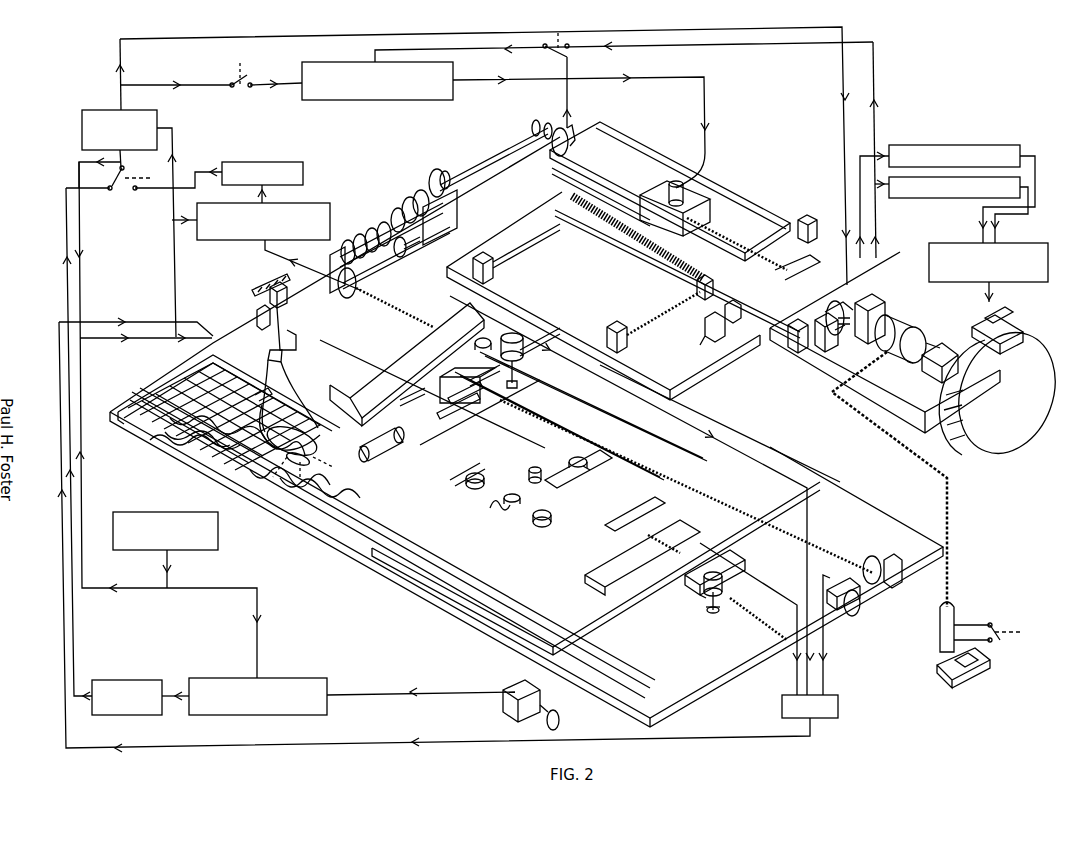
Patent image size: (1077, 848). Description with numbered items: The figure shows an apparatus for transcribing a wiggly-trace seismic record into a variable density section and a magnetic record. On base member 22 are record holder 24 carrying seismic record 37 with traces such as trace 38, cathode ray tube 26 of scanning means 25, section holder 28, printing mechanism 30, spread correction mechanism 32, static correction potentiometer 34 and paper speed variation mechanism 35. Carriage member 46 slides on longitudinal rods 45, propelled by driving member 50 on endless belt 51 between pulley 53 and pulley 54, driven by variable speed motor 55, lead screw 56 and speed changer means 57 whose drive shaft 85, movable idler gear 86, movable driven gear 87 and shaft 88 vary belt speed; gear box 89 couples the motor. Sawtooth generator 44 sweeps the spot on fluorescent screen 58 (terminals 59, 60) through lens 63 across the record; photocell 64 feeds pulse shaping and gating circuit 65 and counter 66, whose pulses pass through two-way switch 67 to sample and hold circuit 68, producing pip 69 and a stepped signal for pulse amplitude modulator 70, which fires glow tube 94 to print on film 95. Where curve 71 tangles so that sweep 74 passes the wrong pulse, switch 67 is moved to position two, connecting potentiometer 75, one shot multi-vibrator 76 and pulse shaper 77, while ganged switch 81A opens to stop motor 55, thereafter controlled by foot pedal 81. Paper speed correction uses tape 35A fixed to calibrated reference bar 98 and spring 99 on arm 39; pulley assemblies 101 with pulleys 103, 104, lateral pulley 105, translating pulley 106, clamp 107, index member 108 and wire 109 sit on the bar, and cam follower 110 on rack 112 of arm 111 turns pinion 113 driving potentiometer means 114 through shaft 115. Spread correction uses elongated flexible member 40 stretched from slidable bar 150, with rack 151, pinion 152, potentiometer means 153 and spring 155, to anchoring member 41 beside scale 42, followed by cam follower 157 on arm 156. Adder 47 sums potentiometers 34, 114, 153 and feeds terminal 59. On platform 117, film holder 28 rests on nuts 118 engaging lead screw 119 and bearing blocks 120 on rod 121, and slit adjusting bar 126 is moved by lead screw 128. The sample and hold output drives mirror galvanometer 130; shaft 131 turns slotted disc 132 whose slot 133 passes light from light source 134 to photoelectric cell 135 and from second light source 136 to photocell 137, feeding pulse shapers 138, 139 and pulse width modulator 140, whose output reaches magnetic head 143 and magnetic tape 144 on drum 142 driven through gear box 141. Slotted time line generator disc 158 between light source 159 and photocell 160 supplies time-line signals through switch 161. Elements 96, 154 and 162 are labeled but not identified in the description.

The base member 22 is at (422, 604).
The record holder 24 is at (596, 630).
The scanning means 25 is at (328, 388).
The cathode ray tube 26 is at (310, 405).
The section holder 28 is at (730, 195).
The recording mechanism 30 is at (710, 203).
The spread correction mechanism 32 is at (300, 328).
The static correction potentiometer 34 is at (855, 605).
The paper speed variation mechanism 35 is at (484, 455).
The linear cam or tape 35A is at (616, 524).
The seismic record 37 is at (356, 552).
The trace 38 is at (335, 498).
The arm 39 is at (690, 554).
The elongated flexible member 40 is at (470, 463).
The anchoring member 41 is at (268, 303).
The scale 42 is at (267, 284).
The sawtooth generator 44 is at (143, 512).
The longitudinal rods 45 is at (655, 440).
The carriage member 46 is at (473, 312).
The adder 47 is at (826, 695).
The driving member 50 is at (545, 370).
The endless belt 51 is at (740, 500).
The pulley 53 is at (350, 298).
The pulley 54 is at (866, 562).
The variable speed motor 55 is at (912, 326).
The lead screw 56 is at (725, 224).
The speed changer means 57 is at (372, 214).
The projecting fluorescent screen 58 is at (270, 446).
The vertical deflection plate terminal 59 is at (282, 381).
The horizontal deflection plate terminal 60 is at (264, 398).
The lens 63 is at (262, 465).
The photoelectric cell 64 is at (370, 462).
The pulse shaping and gating circuit 65 is at (302, 203).
The counter 66 is at (274, 162).
The two-way switch 67 is at (117, 178).
The sample and hold circuit 68 is at (133, 110).
The pip 69 is at (275, 425).
The pulse amplitude modulating circuit 70 is at (354, 62).
The curve 71 is at (380, 223).
The sweep 74 is at (320, 470).
The potentiometer 75 is at (536, 688).
The one shot multi-vibrator 76 is at (295, 678).
The pulse shaper 77 is at (132, 680).
The foot pedal 81 is at (945, 680).
The switch 81A is at (988, 623).
The drive shaft 85 is at (404, 210).
The movable idler gear 86 is at (398, 257).
The movable driven gear 87 is at (412, 250).
The shaft 88 is at (372, 270).
The gear box 89 is at (822, 263).
The glow tube 94 is at (690, 178).
The film 95 is at (748, 208).
The rod 96 is at (653, 262).
The calibrated reference bar 98 is at (590, 570).
The spring 99 is at (658, 540).
The pulley assemblies 101 is at (585, 478).
The pulley 103 is at (462, 485).
The pulley 104 is at (537, 528).
The lateral pulley 105 is at (590, 465).
The translating pulley 106 is at (510, 515).
The clamp 107 is at (540, 466).
The index member 108 is at (500, 502).
The wire 109 is at (578, 462).
The cam follower 110 is at (452, 415).
The arm 111 is at (493, 405).
The rack 112 is at (485, 395).
The pinion 113 is at (520, 385).
The potentiometer means 114 is at (506, 335).
The shaft 115 is at (506, 372).
The platform 117 is at (497, 238).
The nuts 118 is at (697, 284).
The lead screw 119 is at (636, 323).
The bearing blocks 120 is at (568, 236).
The rod 121 is at (502, 255).
The slit adjusting bar 126 is at (737, 320).
The lead screw 128 is at (730, 338).
The mirror galvanometer 130 is at (840, 370).
The shaft 131 is at (880, 300).
The slotted disc 132 is at (845, 290).
The slot 133 is at (840, 332).
The light source 134 is at (812, 348).
The photoelectric cell 135 is at (788, 338).
The second light source 136 is at (878, 302).
The photocell 137 is at (828, 240).
The pulse shaper circuit 138 is at (928, 198).
The pulse shaper 139 is at (982, 145).
The pulse width modulator 140 is at (1014, 243).
The gear box 141 is at (924, 372).
The magnetic recording drum 142 is at (1020, 300).
The magnetic head 143 is at (985, 312).
The magnetic tape 144 is at (963, 452).
The slidable bar 150 is at (725, 600).
The rack 151 is at (700, 600).
The pinion 152 is at (712, 615).
The potentiometer means 153 is at (720, 572).
The bar 154 is at (705, 612).
The spring 155 is at (766, 636).
The arm 156 is at (440, 398).
The cam follower 157 is at (414, 413).
The slotted time line generator disc 158 is at (552, 146).
The light source 159 is at (545, 124).
The photocell 160 is at (574, 132).
The switch 161 is at (560, 54).
The switch 162 is at (242, 89).